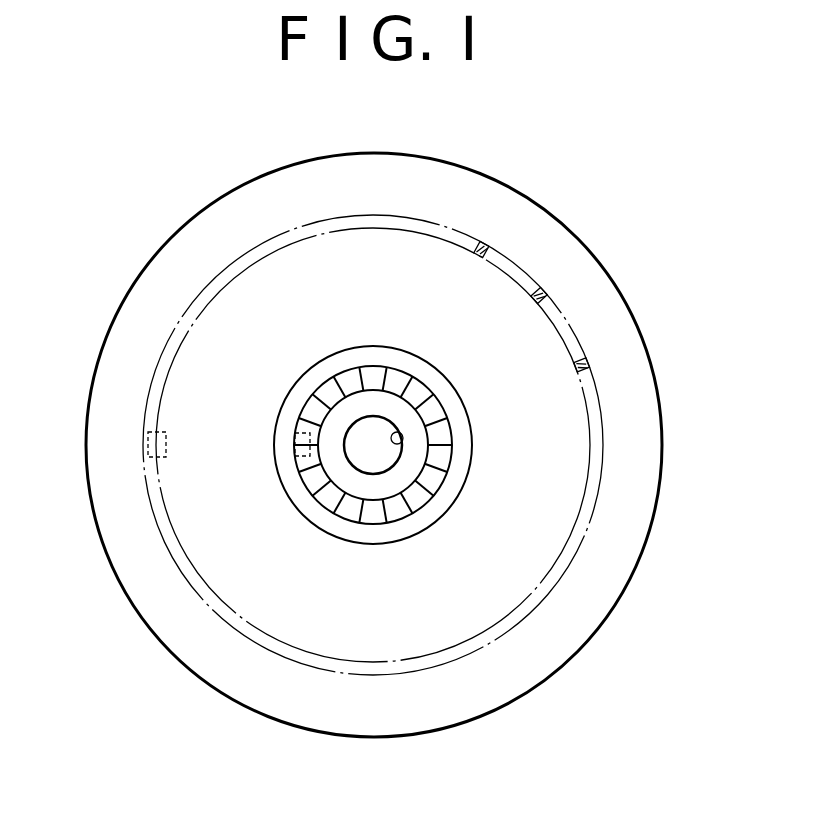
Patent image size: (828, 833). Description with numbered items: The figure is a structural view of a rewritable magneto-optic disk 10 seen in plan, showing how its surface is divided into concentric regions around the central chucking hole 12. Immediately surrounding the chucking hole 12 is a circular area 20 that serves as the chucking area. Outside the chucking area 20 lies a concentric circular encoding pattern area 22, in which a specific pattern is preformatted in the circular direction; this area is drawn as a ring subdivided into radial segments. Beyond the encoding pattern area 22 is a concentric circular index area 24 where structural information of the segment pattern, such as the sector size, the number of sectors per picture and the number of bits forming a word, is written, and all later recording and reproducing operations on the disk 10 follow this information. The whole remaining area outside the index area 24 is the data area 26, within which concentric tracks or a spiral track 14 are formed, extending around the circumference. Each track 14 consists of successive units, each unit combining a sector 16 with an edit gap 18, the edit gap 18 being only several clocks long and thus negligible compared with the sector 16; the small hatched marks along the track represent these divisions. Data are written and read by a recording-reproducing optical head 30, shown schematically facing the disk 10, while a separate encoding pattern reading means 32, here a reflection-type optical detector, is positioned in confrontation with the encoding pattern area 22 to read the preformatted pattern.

The disk 10 is at (630, 590).
The chucking hole 12 is at (404, 443).
The track 14 is at (458, 225).
The sector 16 is at (522, 268).
The edit gap 18 is at (548, 293).
The circular area 20 is at (372, 400).
The encoding pattern area 22 is at (321, 499).
The index area 24 is at (448, 497).
The data area 26 is at (507, 667).
The recording-reproducing head 30 is at (147, 453).
The encoding pattern reading means 32 is at (295, 432).